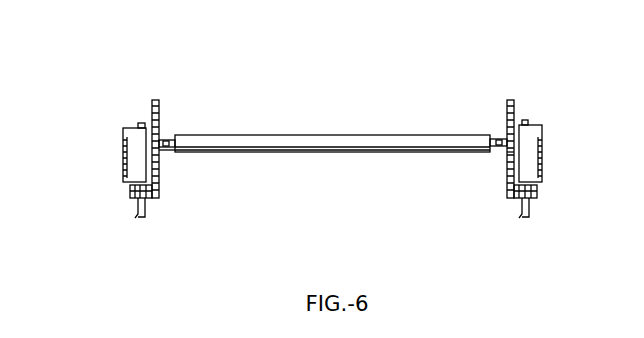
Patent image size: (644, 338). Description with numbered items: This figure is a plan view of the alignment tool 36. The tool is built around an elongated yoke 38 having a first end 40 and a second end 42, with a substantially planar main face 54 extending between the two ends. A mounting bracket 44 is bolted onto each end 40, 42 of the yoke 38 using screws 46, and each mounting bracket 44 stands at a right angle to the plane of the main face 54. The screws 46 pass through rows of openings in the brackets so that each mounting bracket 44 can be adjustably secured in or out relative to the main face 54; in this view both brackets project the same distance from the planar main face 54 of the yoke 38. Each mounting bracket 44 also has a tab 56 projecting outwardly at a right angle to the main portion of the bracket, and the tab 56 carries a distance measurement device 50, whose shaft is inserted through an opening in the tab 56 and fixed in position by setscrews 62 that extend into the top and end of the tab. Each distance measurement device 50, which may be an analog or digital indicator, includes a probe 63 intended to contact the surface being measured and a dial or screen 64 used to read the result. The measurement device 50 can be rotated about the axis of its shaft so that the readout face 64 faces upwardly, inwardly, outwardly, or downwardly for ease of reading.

The alignment tool 36 is at (362, 82).
The yoke 38 is at (244, 135).
The first end 40 is at (160, 157).
The second end 42 is at (508, 157).
The mounting bracket 44 is at (156, 100).
The screw 46 is at (168, 141).
The distance measurement device 50 is at (130, 127).
The main face 54 is at (267, 153).
The tab 56 is at (518, 197).
The setscrew 62 is at (131, 196).
The probe 63 is at (137, 212).
The dial or screen 64 is at (123, 160).